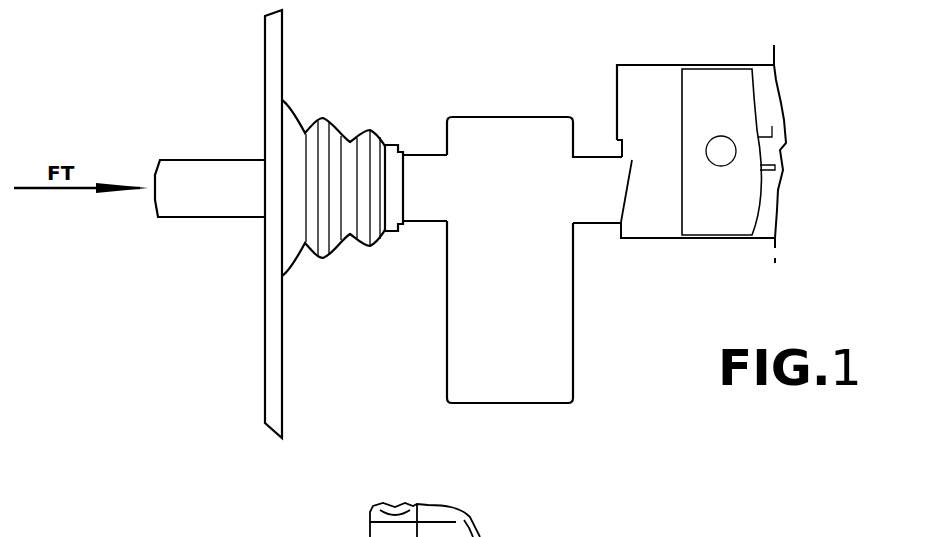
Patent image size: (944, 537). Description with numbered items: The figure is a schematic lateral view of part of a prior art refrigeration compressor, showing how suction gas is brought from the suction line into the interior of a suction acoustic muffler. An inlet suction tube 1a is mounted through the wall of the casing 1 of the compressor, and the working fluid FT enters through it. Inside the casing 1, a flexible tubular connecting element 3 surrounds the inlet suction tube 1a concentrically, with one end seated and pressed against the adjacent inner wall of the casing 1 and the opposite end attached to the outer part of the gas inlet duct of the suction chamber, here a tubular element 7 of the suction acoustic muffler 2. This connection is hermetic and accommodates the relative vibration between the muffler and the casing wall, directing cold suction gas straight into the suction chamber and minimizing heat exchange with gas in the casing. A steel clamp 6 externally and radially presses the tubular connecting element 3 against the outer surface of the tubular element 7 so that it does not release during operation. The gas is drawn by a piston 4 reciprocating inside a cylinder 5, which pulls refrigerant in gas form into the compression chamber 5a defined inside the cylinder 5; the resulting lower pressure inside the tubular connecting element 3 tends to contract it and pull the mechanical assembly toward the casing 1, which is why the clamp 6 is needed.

The casing 1 is at (288, 46).
The inlet suction tube 1a is at (227, 156).
The suction acoustic muffler 2 is at (444, 349).
The flexible tubular connecting element 3 is at (341, 123).
The piston 4 is at (723, 209).
The cylinder 5 is at (648, 242).
The compression chamber 5a is at (657, 69).
The clamp 6 is at (395, 238).
The tubular element 7 is at (428, 151).